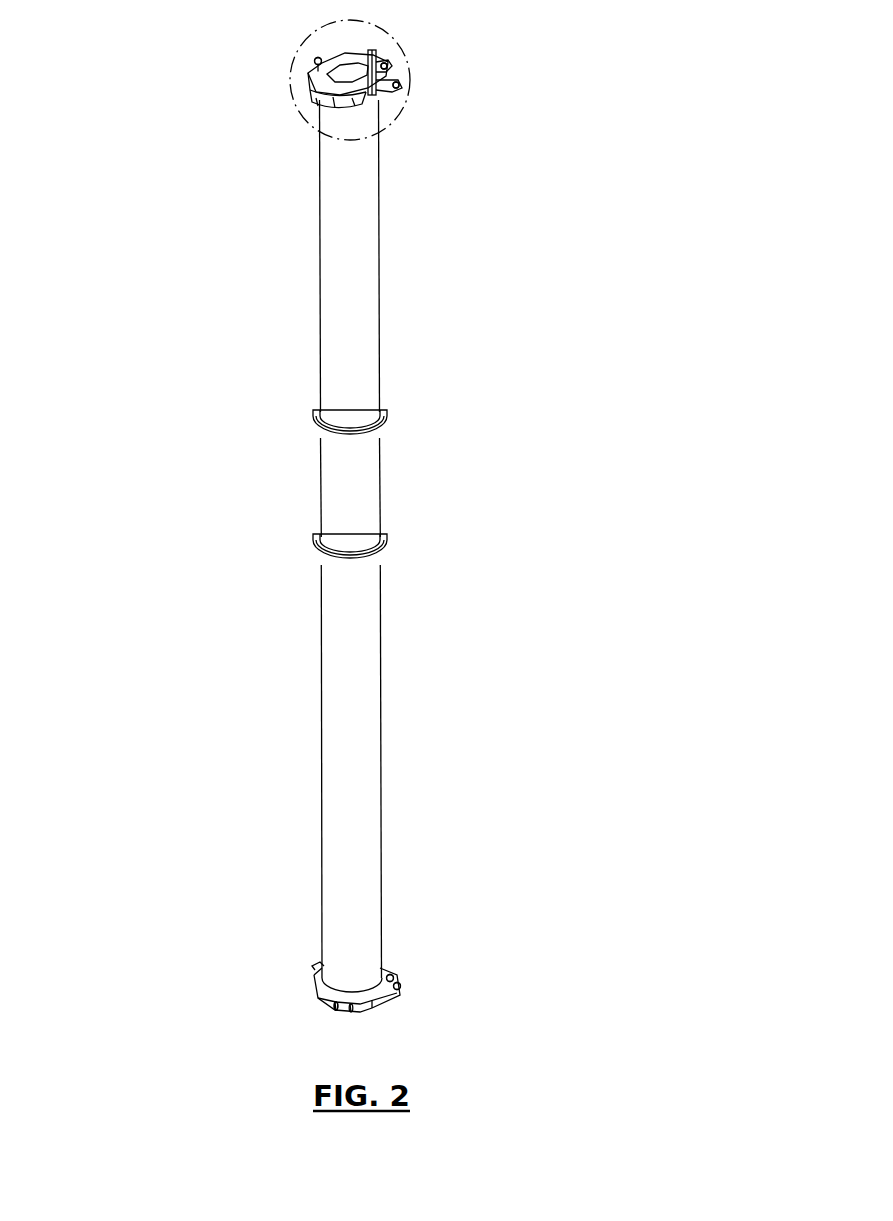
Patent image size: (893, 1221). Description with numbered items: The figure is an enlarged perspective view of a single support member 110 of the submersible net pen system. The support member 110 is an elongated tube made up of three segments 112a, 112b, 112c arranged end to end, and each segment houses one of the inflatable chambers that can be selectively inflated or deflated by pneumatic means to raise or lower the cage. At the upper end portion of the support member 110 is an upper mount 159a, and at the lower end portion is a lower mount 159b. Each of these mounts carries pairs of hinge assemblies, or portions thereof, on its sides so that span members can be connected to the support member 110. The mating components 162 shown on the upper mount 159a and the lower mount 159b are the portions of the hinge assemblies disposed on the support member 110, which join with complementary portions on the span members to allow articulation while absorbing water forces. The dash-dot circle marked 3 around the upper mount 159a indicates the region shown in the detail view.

The support member 110 is at (152, 416).
The first segment of support member 112a is at (360, 358).
The second segment of support member 112b is at (360, 482).
The third segment of support member 112c is at (362, 642).
The upper mount 159a is at (300, 86).
The lower mount 159b is at (382, 997).
The first portion of hinge assembly 162 is at (394, 63).
The detail view circle for FIG. 3 is at (412, 86).